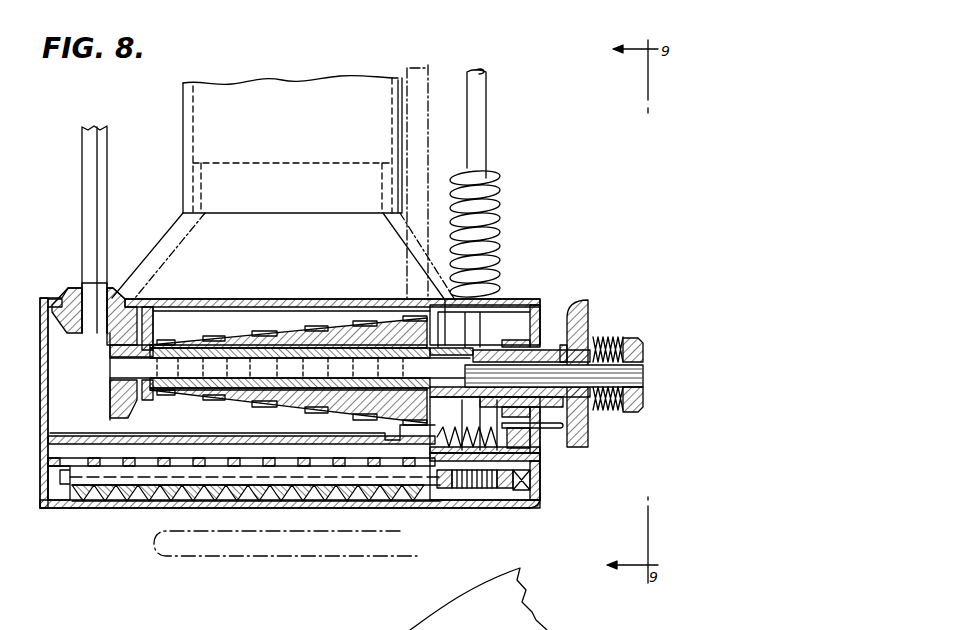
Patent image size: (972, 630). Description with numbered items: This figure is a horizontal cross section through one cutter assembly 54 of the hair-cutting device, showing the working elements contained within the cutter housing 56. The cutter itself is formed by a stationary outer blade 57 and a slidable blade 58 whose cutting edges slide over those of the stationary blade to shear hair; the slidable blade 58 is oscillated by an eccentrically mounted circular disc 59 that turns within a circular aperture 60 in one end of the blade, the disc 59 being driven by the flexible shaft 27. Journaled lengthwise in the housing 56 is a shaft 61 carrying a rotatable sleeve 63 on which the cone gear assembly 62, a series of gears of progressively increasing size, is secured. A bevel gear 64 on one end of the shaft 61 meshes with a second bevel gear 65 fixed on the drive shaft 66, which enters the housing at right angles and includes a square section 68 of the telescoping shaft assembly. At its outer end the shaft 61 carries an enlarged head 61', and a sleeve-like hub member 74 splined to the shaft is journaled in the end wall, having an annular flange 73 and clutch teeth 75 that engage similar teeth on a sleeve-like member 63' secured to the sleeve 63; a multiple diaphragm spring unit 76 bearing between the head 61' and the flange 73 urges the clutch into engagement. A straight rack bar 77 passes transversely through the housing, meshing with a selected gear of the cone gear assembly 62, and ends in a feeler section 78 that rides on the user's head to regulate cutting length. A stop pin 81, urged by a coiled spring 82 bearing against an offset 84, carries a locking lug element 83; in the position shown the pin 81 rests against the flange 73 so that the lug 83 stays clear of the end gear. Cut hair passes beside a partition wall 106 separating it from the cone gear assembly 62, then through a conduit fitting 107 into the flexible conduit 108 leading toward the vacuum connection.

The flexible conduit 108 is at (288, 88).
The conduit fitting 107 is at (159, 212).
The flexible shaft 27 is at (480, 115).
The square section of shaft assembly 68 is at (112, 208).
The drive shaft 66 is at (110, 256).
The cutter assembly 54 is at (40, 506).
The second bevel gear 65 is at (70, 333).
The bevel gear 64 is at (112, 401).
The cone gear assembly 62 is at (290, 332).
The sleeve 63 is at (288, 310).
The straight rack bar 77 is at (402, 290).
The cutter housing 56 is at (515, 314).
The sleeve-like member 63' is at (451, 336).
The sleeve-like hub member 74 is at (557, 345).
The annular flange 73 is at (590, 310).
The multiple diaphragm spring unit 76 is at (603, 405).
The enlarged head 61' is at (643, 352).
The shaft 61 is at (579, 352).
The locking lug element 83 is at (380, 430).
The partition wall 106 is at (158, 438).
The slidable blade 58 is at (118, 500).
The coiled spring 82 is at (443, 430).
The clutch teeth 75 is at (470, 432).
The offset 84 is at (500, 428).
The stop pin 81 is at (548, 430).
The eccentrically mounted circular disc 59 is at (535, 477).
The circular aperture 60 is at (531, 486).
The stationary outer blade 57 is at (492, 512).
The feeler section 78 is at (245, 562).